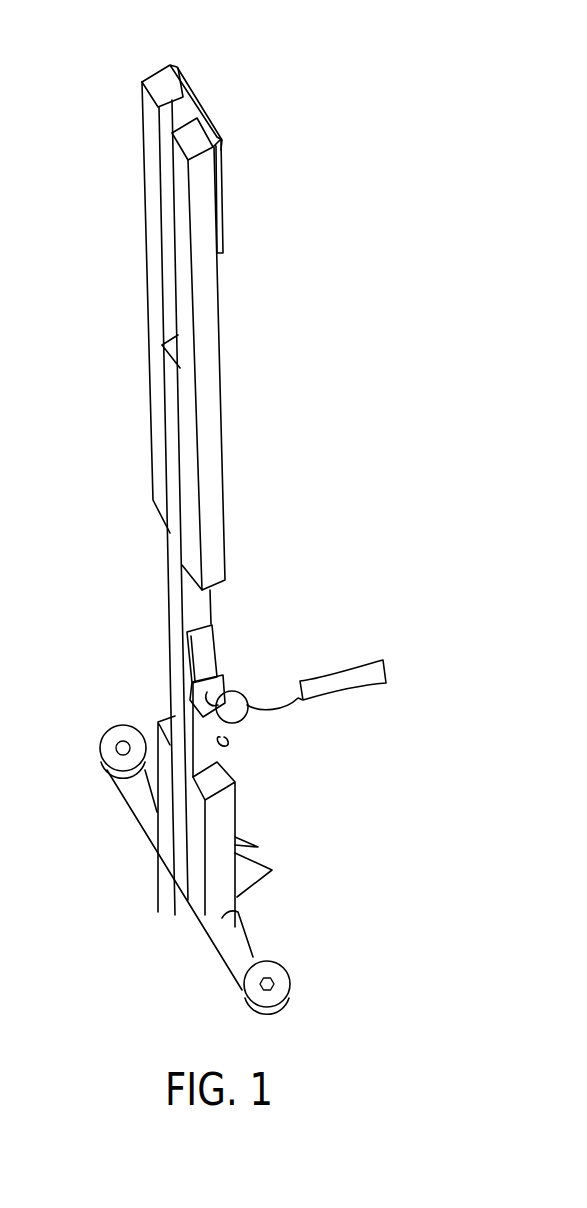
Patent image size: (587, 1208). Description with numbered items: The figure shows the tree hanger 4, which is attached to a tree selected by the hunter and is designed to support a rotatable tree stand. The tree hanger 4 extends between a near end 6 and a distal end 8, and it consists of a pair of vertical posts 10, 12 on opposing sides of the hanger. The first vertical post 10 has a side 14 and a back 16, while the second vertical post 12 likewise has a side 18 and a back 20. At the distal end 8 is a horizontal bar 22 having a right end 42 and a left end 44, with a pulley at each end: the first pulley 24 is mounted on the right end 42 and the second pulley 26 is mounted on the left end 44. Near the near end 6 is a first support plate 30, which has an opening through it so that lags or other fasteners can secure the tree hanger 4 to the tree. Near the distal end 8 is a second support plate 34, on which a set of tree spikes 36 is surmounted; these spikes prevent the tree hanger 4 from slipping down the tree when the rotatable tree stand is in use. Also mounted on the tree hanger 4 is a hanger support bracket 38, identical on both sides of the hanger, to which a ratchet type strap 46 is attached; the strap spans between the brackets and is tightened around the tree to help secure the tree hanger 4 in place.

The tree hanger 4 is at (313, 259).
The near end 6 is at (265, 97).
The distal end 8 is at (326, 900).
The first vertical post 10 is at (208, 305).
The second vertical post 12 is at (157, 82).
The side of first vertical post 14 is at (212, 398).
The back of first vertical post 16 is at (196, 477).
The side of second vertical post 18 is at (142, 85).
The back of second vertical post 20 is at (152, 152).
The horizontal bar 22 is at (265, 938).
The first pulley 24 is at (290, 997).
The second pulley 26 is at (100, 737).
The first support plate 30 is at (223, 182).
The second support plate 34 is at (240, 810).
The tree spikes 36 is at (257, 840).
The hanger support bracket 38 is at (218, 633).
The right end 42 is at (231, 1005).
The left end 44 is at (91, 789).
The ratchet type strap 46 is at (340, 667).